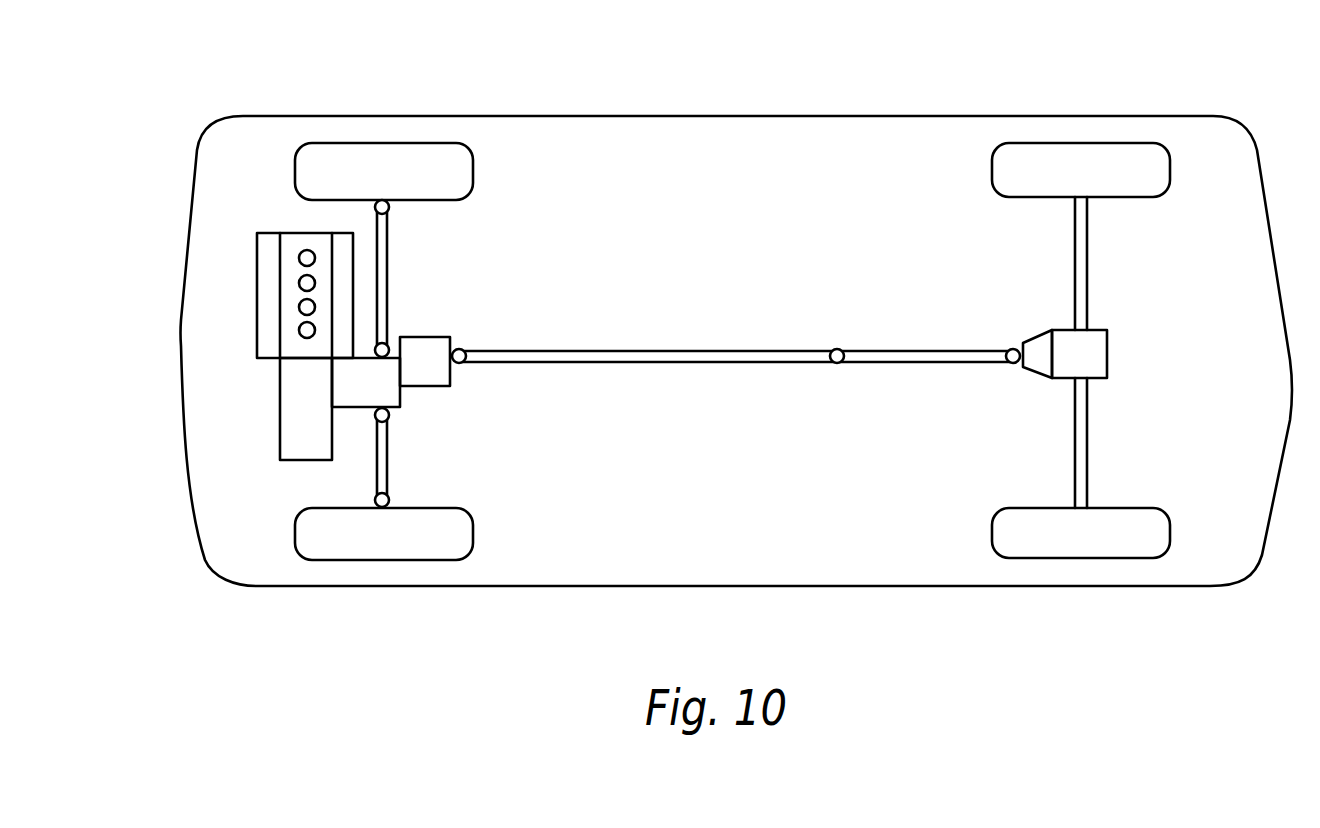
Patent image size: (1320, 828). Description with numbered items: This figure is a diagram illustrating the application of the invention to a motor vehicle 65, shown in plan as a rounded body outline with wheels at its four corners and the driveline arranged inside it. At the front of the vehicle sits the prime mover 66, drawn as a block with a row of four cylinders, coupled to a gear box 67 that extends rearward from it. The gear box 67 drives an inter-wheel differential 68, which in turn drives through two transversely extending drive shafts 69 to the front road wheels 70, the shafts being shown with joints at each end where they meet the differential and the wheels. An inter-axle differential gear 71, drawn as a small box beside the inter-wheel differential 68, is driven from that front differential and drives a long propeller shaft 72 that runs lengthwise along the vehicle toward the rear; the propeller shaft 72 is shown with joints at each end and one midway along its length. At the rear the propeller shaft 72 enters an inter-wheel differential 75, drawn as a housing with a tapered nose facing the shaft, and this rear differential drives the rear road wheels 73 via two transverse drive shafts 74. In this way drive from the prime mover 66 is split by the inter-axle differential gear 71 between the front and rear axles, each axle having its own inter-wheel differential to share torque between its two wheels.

The motor vehicle 65 is at (725, 155).
The prime mover 66 is at (292, 245).
The gear box 67 is at (292, 441).
The inter-wheel differential 68 is at (387, 394).
The drive shafts 69 is at (388, 250).
The front road wheels 70 is at (392, 152).
The inter-axle differential gear 71 is at (430, 348).
The propeller shaft 72 is at (742, 353).
The rear road wheels 73 is at (1089, 152).
The drive shafts 74 is at (1075, 263).
The inter-wheel differential 75 is at (1105, 366).